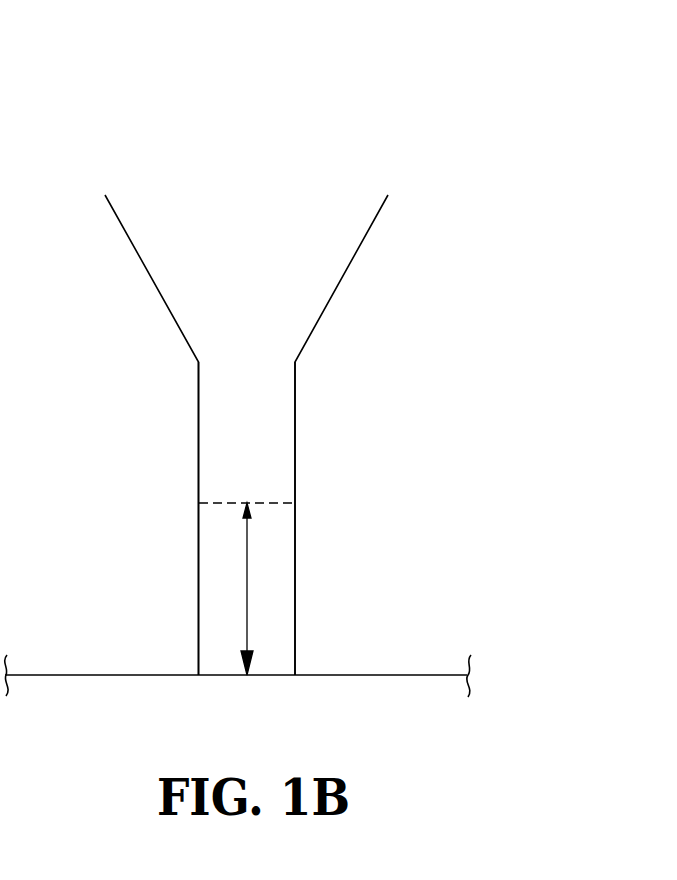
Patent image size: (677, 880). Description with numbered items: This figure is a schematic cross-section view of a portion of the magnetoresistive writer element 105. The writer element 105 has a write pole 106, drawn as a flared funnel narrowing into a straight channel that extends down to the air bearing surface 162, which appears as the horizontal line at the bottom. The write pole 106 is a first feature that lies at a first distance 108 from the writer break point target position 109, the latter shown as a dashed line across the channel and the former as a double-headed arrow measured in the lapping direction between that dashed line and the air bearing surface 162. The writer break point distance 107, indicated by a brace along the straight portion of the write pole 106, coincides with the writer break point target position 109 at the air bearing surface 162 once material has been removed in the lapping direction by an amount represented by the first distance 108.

The magnetoresistive writer element 105 is at (428, 110).
The write pole 106 is at (268, 437).
The writer break point distance 107 is at (190, 362).
The first distance 108 is at (247, 590).
The writer break point target position 109 is at (263, 503).
The air bearing surface 162 is at (62, 675).